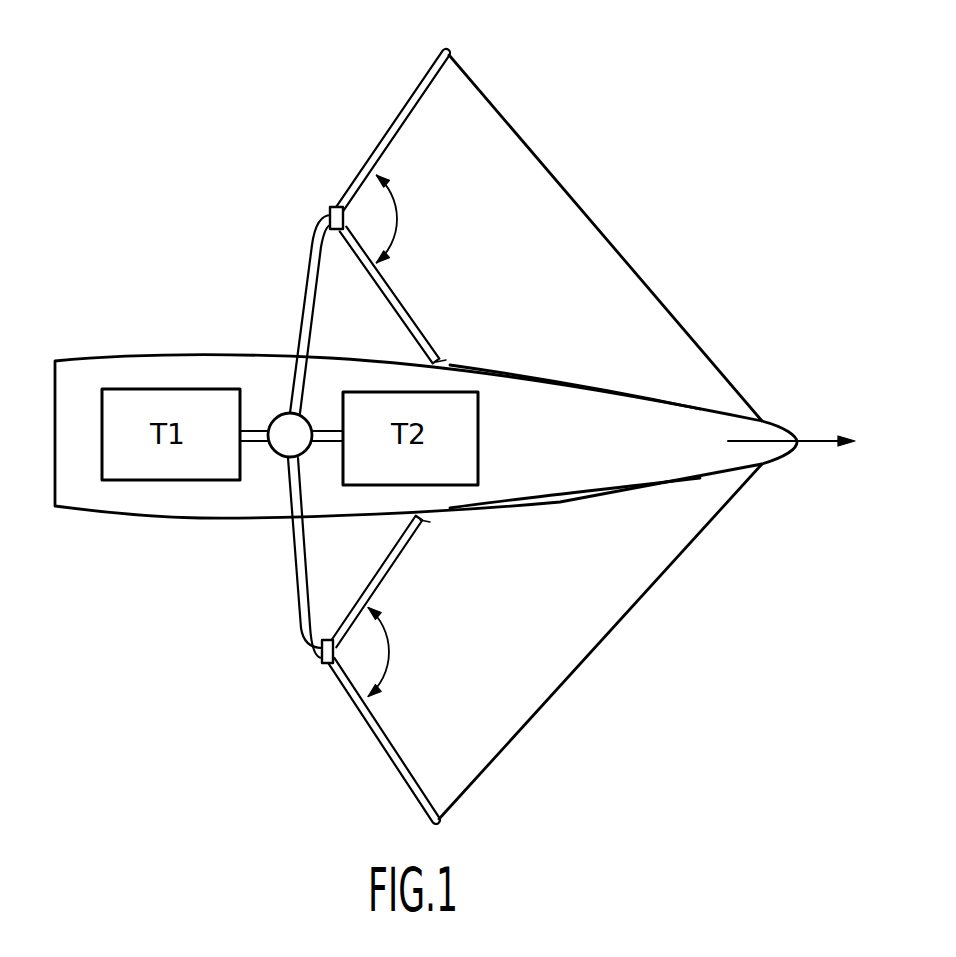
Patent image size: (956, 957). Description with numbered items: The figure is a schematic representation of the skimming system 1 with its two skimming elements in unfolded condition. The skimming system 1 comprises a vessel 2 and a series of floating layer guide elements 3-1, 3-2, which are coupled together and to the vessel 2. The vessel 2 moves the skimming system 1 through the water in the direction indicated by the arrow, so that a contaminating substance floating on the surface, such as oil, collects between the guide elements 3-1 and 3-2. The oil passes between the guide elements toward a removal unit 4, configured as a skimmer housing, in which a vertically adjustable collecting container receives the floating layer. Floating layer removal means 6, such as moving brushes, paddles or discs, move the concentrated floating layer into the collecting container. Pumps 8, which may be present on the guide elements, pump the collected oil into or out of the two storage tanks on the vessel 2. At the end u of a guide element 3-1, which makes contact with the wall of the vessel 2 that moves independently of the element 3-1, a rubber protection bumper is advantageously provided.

The skimming system 1 is at (646, 257).
The vessel 2 is at (583, 418).
The floating layer guide element 3-1 is at (400, 301).
The floating layer guide element 3-2 is at (389, 120).
The removal unit 4 is at (335, 207).
The floating layer removal means 6 is at (504, 371).
The pump 8 is at (285, 440).
The end of guide element u is at (436, 362).